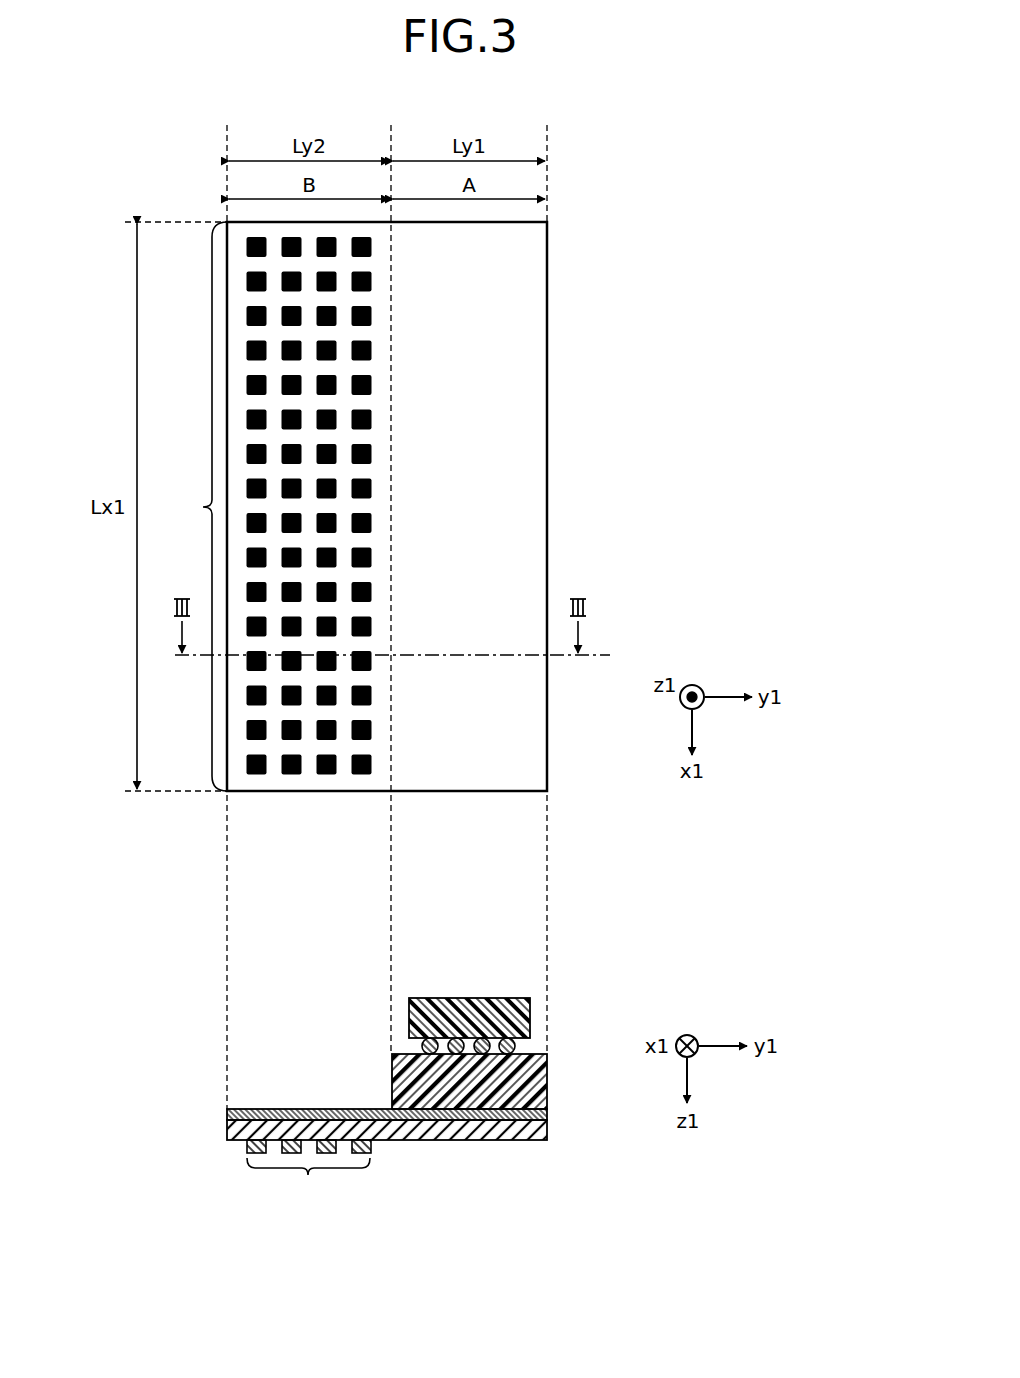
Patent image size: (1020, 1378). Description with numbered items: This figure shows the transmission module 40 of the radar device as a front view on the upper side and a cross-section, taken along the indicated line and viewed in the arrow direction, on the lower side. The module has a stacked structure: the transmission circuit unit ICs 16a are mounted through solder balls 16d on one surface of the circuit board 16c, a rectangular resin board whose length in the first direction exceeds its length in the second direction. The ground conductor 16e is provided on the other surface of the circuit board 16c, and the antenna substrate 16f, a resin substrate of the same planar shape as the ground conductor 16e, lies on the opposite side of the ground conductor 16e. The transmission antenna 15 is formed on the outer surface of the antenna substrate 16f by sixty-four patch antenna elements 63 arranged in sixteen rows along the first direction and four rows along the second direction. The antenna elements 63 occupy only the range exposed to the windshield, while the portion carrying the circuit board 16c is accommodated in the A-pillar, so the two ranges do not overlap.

The transmission module 40 is at (131, 194).
The transmission antenna 15 is at (269, 715).
The antenna element 63 is at (247, 245).
The transmission circuit unit integrated circuit 16a is at (515, 1019).
The circuit board 16c is at (536, 1085).
The solder ball 16d is at (514, 1042).
The ground conductor 16e is at (543, 1113).
The antenna substrate 16f is at (235, 778).